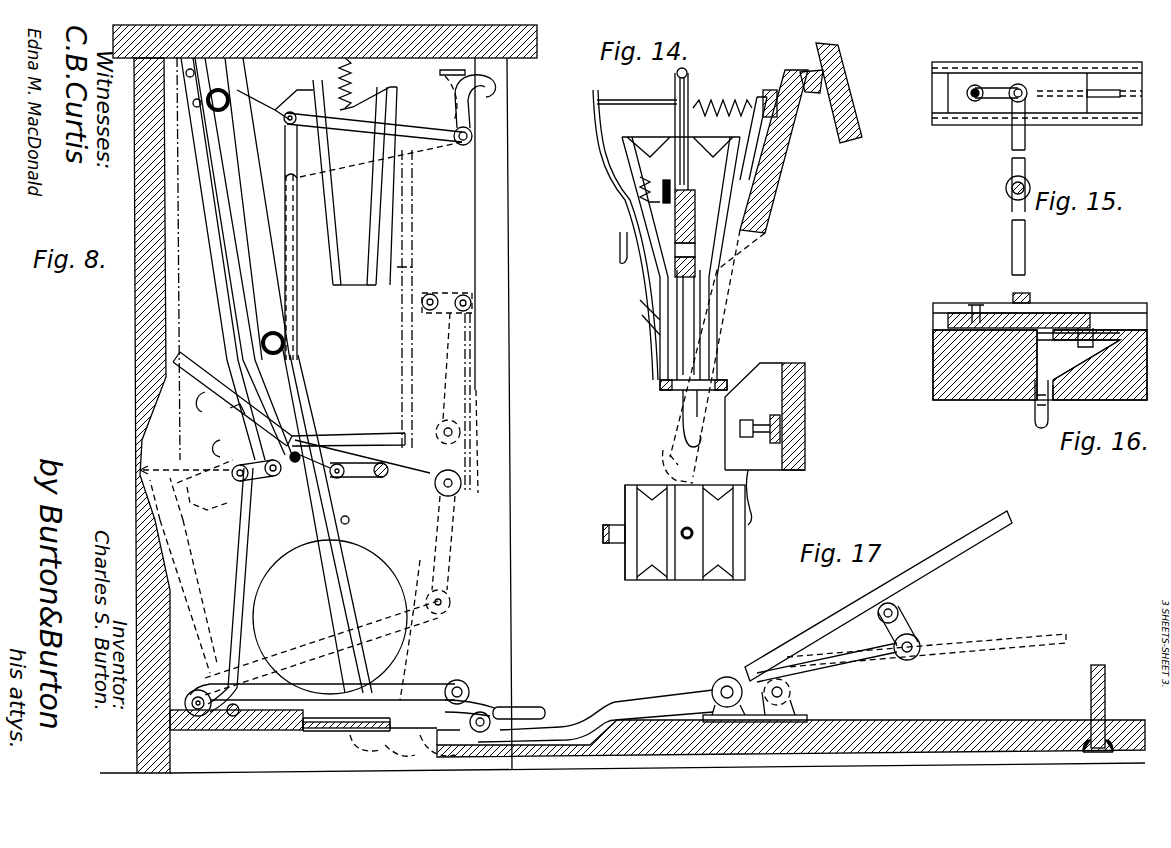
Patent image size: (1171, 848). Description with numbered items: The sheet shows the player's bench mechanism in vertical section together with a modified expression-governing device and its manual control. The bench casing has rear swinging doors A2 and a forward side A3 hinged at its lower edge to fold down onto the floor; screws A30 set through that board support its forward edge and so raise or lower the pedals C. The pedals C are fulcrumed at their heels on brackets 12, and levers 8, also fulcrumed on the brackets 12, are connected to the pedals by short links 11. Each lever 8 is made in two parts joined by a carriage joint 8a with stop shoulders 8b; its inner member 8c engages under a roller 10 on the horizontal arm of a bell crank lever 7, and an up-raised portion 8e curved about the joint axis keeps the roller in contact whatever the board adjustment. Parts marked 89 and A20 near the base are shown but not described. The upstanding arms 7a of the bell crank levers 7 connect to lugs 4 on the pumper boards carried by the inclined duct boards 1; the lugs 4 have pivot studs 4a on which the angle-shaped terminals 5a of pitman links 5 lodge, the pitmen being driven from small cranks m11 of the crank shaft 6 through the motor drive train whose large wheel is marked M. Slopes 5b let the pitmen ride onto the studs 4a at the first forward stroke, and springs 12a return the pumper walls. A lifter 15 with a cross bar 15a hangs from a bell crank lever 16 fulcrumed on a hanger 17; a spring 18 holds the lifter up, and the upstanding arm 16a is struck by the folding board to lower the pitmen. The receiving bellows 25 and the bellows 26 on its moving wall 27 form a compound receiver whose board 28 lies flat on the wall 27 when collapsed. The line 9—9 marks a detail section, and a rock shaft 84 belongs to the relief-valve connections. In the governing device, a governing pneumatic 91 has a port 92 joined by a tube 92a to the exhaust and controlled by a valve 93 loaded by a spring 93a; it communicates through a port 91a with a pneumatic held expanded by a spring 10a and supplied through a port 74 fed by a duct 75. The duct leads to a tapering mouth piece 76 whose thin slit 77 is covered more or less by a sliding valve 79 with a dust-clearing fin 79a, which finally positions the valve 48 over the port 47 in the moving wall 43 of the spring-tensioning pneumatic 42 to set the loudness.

In FIG. 8, the bellows-supporting duct boards 1 is at (300, 463).
In FIG. 14, the bellows-supporting duct boards 1 is at (842, 80).
In FIG. 8, the lug 4 is at (272, 480).
In FIG. 8, the pivot studs 4a is at (240, 482).
In FIG. 8, the pitman link 5 is at (203, 380).
In FIG. 8, the angle-shaped terminals 5a is at (230, 412).
In FIG. 8, the slopes 5b is at (222, 400).
In FIG. 8, the crank shaft 6 is at (384, 478).
In FIG. 8, the bell crank levers 7 is at (295, 648).
In FIG. 8, the upstanding arms 7a is at (185, 548).
In FIG. 8, the pedal-operated levers 8 is at (452, 344).
In FIG. 8, the carriage joint 8a is at (500, 712).
In FIG. 8, the shoulder 8b is at (425, 744).
In FIG. 8, the lever member 8c is at (300, 735).
In FIG. 8, the up-raised portion 8e is at (485, 700).
In FIG. 8, the bar 89 is at (548, 712).
In FIG. 8, the rock shaft 84 is at (233, 716).
In FIG. 8, the section line 9 is at (137, 603).
In FIG. 17, the section line 9 is at (700, 615).
In FIG. 8, the rollers 10 is at (458, 680).
In FIG. 14, the rollers 10 is at (681, 263).
In FIG. 17, the rollers 10 is at (742, 560).
In FIG. 14, the spring 10a is at (722, 96).
In FIG. 8, the short links 11 is at (440, 298).
In FIG. 8, the brackets 12 is at (480, 493).
In FIG. 8, the springs 12a is at (240, 252).
In FIG. 8, the lifter 15 is at (283, 342).
In FIG. 8, the cross bar 15a is at (335, 525).
In FIG. 8, the bell crank lever 16 is at (417, 128).
In FIG. 15, the bell crank lever 16 is at (900, 95).
In FIG. 8, the upstanding arm 16a is at (492, 88).
In FIG. 8, the hanger 17 is at (452, 79).
In FIG. 14, the hanger 17 is at (608, 137).
In FIG. 8, the spring 18 is at (346, 78).
In FIG. 8, the receiving bellows 25 is at (252, 112).
In FIG. 8, the bellows 26 is at (353, 160).
In FIG. 8, the moving wall 27 is at (351, 297).
In FIG. 8, the moving board 28 is at (382, 200).
In FIG. 14, the spring-tensioning pneumatic 42 is at (805, 74).
In FIG. 14, the moving wall 43 is at (762, 226).
In FIG. 14, the port 47 is at (805, 117).
In FIG. 14, the valve 48 is at (772, 90).
In FIG. 14, the air inlet port 74 is at (700, 275).
In FIG. 14, the duct 75 is at (688, 444).
In FIG. 16, the duct 75 is at (1035, 418).
In FIG. 15, the tapering mouth piece 76 is at (1100, 106).
In FIG. 16, the tapering mouth piece 76 is at (1102, 375).
In FIG. 15, the slit 77 is at (1101, 91).
In FIG. 16, the slit 77 is at (1078, 356).
In FIG. 15, the valve 79 is at (1042, 80).
In FIG. 16, the valve 79 is at (1048, 313).
In FIG. 16, the fin 79a is at (1090, 335).
In FIG. 14, the governing pneumatic 91 is at (660, 303).
In FIG. 17, the governing pneumatic 91 is at (637, 565).
In FIG. 14, the port 91a is at (678, 252).
In FIG. 14, the port 92 is at (688, 192).
In FIG. 14, the tube 92a is at (676, 80).
In FIG. 17, the tube 92a is at (687, 540).
In FIG. 14, the valve 93 is at (663, 193).
In FIG. 14, the spring 93a is at (608, 122).
In FIG. 17, the spring 93a is at (610, 543).
In FIG. 8, the small cranks m11 is at (360, 483).
In FIG. 8, the swinging doors A2 is at (135, 323).
In FIG. 8, the forward side A3 is at (957, 728).
In FIG. 8, the base A20 is at (346, 744).
In FIG. 8, the screws A30 is at (1091, 698).
In FIG. 8, the pedals C is at (414, 222).
In FIG. 8, the motor M is at (330, 617).